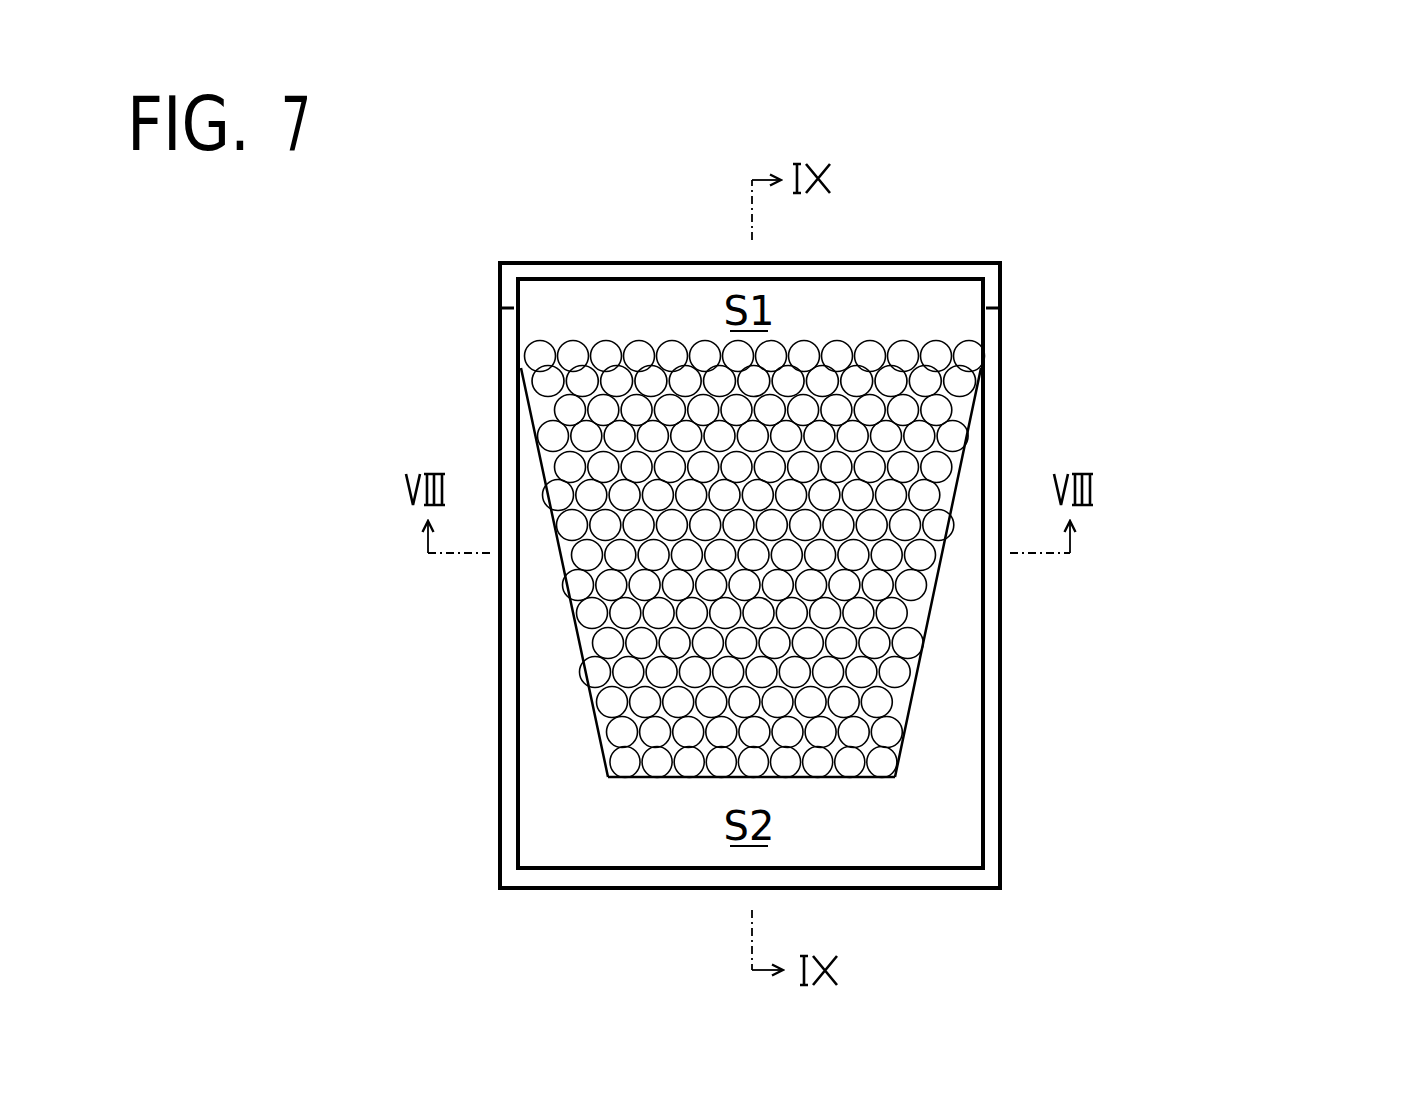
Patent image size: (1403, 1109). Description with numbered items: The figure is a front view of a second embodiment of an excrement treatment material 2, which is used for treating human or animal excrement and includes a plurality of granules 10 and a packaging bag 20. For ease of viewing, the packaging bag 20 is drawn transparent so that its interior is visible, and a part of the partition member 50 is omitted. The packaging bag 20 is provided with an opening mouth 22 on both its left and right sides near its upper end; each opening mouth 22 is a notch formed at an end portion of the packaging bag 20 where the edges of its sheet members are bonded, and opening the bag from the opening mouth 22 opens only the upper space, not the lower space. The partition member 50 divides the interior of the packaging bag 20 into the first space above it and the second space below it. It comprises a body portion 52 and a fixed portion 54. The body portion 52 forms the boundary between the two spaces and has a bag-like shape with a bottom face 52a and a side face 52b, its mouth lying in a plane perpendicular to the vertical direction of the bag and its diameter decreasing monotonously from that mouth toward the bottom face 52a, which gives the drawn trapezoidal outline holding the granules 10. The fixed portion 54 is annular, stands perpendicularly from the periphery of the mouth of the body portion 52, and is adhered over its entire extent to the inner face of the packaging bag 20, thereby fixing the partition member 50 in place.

The excrement treatment material 2 is at (962, 182).
The granules 10 is at (587, 614).
The packaging bag 20 is at (500, 263).
The opening mouth 22 is at (1005, 308).
The partition member 50 is at (948, 583).
The body portion 52 is at (1207, 697).
The bottom face 52a is at (840, 778).
The side face 52b is at (920, 679).
The fixed portion 54 is at (985, 383).